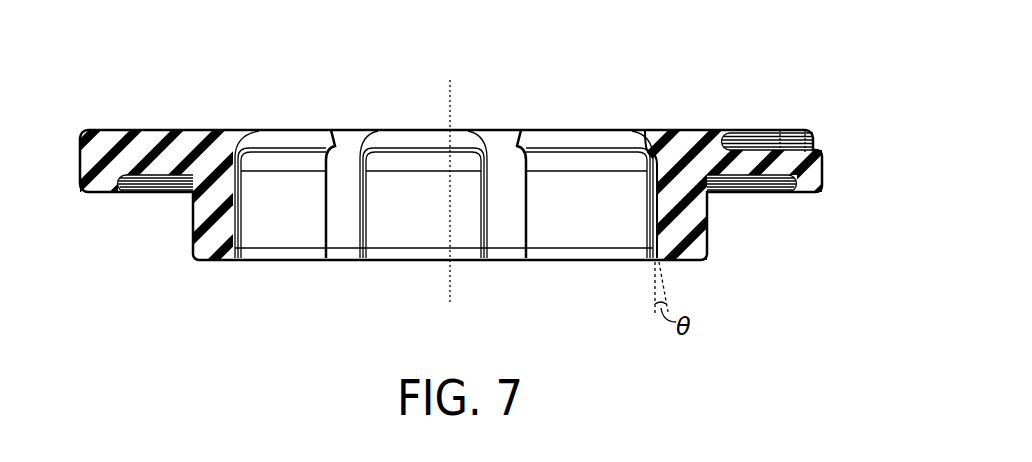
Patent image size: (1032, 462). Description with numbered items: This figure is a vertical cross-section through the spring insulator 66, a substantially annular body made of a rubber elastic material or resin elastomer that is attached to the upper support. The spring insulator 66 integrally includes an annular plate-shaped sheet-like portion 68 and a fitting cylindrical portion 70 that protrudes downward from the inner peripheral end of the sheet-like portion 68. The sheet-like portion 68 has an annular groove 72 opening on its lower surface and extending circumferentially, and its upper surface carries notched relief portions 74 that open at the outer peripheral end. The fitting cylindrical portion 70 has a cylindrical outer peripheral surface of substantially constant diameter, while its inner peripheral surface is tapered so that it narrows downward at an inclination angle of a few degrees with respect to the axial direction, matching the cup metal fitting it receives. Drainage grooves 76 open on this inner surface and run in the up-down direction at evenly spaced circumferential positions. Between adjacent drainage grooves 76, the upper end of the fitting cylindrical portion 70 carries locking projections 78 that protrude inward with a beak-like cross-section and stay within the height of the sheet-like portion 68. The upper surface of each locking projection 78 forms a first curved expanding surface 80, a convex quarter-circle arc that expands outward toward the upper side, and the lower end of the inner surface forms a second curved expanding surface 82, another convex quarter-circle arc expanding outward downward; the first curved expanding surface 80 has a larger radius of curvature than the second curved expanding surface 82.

The spring insulator 66 is at (770, 74).
The sheet-like portion 68 is at (143, 152).
The fitting cylindrical portion 70 is at (210, 208).
The annular groove 72 is at (128, 185).
The notched relief portion 74 is at (748, 150).
The drainage groove 76 is at (332, 224).
The locking projection 78 is at (268, 140).
The first curved expanding surface 80 is at (297, 140).
The second curved expanding surface 82 is at (273, 255).